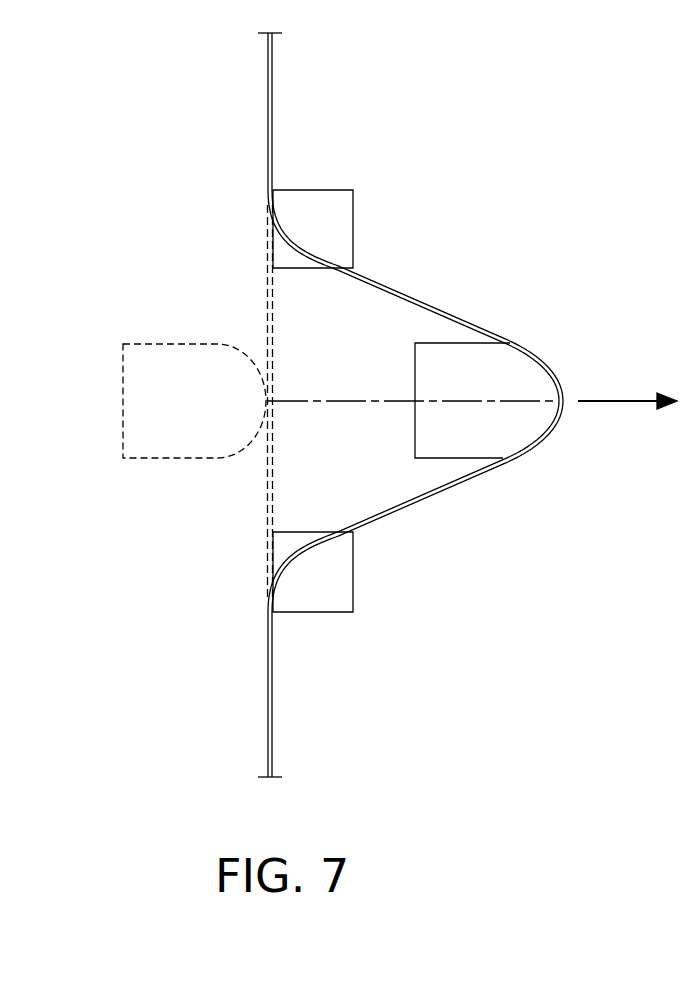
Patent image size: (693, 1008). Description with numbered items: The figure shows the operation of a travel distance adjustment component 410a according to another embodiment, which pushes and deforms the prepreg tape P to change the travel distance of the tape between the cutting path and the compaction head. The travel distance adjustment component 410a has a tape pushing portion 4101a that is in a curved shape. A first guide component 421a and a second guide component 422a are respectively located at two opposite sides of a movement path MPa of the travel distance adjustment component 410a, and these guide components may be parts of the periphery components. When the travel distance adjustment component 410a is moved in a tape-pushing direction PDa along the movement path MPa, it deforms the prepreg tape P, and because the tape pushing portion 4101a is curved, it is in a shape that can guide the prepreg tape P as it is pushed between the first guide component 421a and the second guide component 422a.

The prepreg tape P is at (270, 108).
The first guide component 421a is at (345, 228).
The second guide component 422a is at (345, 573).
The travel distance adjustment component 410a is at (432, 430).
The tape pushing portion 4101a is at (552, 393).
The movement path MPa is at (352, 399).
The tape-pushing direction PDa is at (627, 413).